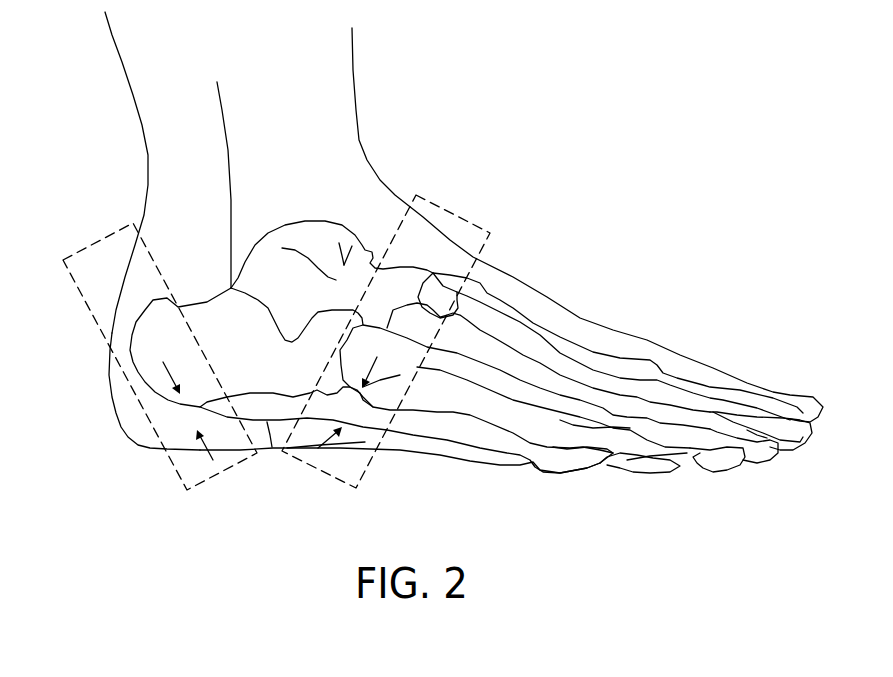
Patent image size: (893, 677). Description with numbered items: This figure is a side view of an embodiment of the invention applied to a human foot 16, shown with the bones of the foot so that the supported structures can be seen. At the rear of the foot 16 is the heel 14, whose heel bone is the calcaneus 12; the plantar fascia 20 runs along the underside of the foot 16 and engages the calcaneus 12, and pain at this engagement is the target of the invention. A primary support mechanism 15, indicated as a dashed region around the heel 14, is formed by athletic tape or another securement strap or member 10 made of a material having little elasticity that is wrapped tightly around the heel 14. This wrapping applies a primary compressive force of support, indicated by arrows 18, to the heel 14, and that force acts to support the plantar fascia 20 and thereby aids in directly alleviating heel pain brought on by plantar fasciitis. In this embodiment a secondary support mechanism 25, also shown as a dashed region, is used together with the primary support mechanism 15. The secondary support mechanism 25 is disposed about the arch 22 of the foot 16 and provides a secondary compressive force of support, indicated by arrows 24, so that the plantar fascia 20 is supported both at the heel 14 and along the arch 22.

The securement member 10 is at (481, 236).
The calcaneus 12 is at (177, 333).
The heel 14 is at (110, 413).
The primary support mechanism 15 is at (90, 216).
The human foot 16 is at (640, 328).
The arrows (primary compressive force) 18 is at (214, 462).
The plantar fascia 20 is at (270, 452).
The arch 22 is at (377, 447).
The arrows (secondary compressive force) 24 is at (328, 446).
The secondary support mechanism 25 is at (462, 199).